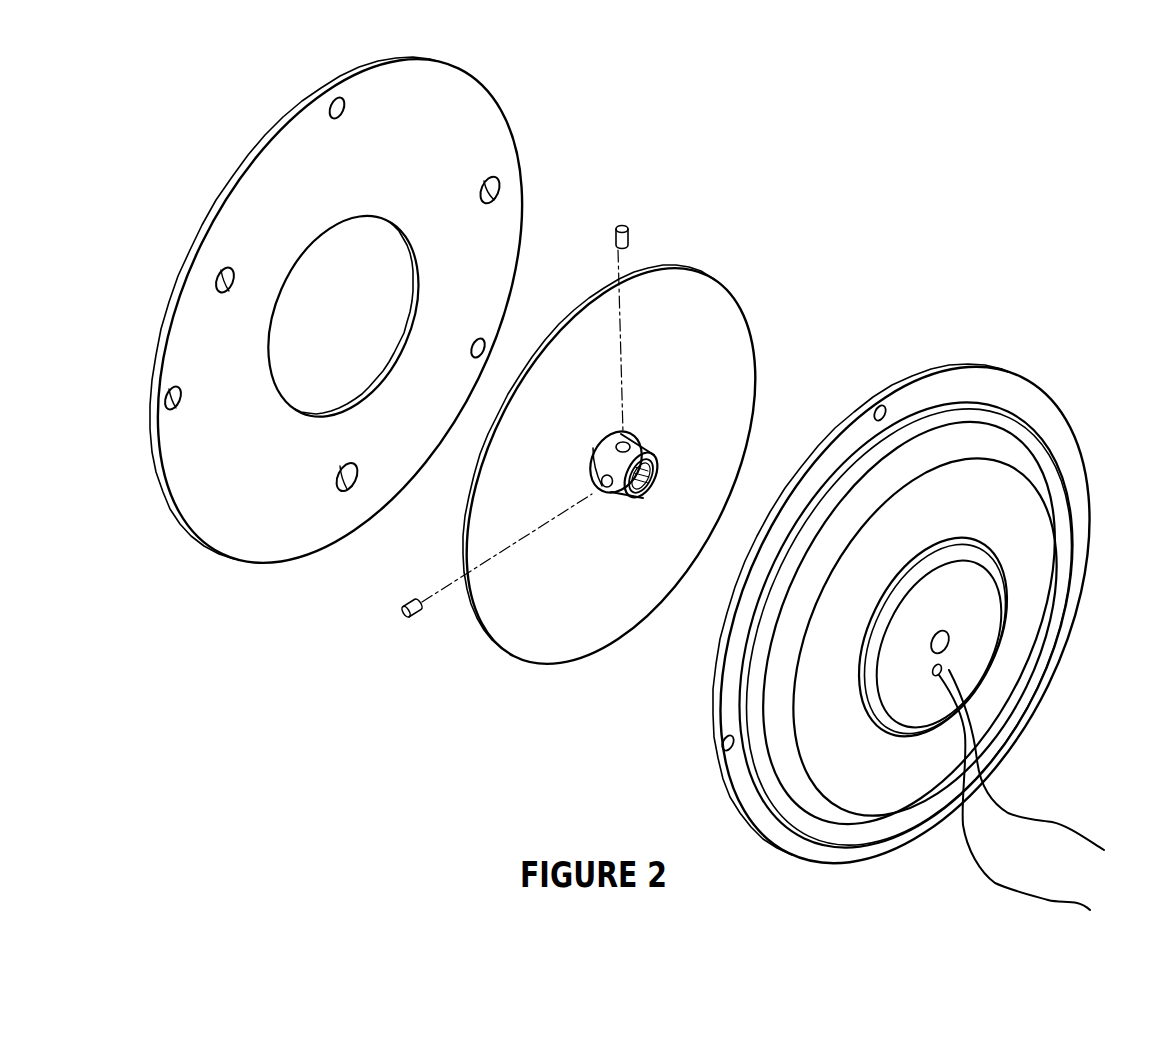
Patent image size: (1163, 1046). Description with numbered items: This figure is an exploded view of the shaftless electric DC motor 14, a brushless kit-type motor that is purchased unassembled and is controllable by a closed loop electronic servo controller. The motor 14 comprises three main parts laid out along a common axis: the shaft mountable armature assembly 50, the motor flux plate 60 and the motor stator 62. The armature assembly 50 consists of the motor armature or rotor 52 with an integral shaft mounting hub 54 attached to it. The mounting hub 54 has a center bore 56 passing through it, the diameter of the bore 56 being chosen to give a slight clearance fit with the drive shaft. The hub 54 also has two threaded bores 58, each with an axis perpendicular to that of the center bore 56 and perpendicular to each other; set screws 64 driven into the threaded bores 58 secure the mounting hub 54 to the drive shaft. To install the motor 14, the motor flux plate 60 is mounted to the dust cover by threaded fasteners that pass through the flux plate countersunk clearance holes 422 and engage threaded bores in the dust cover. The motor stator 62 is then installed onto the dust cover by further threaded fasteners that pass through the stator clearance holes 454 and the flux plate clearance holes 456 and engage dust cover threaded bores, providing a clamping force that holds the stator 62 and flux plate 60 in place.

The shaftless electric DC motor 14 is at (833, 486).
The shaft mountable armature assembly 50 is at (623, 477).
The motor armature 52 is at (575, 622).
The shaft mounting hub 54 is at (612, 460).
The center bore 56 is at (582, 477).
The threaded bores 58 is at (600, 489).
The motor flux plate 60 is at (356, 311).
The motor stator 62 is at (985, 637).
The set screws 64 is at (403, 614).
The flux plate countersunk clearance holes 422 is at (350, 488).
The stator clearance holes 454 is at (895, 398).
The flux plate clearance holes 456 is at (348, 106).